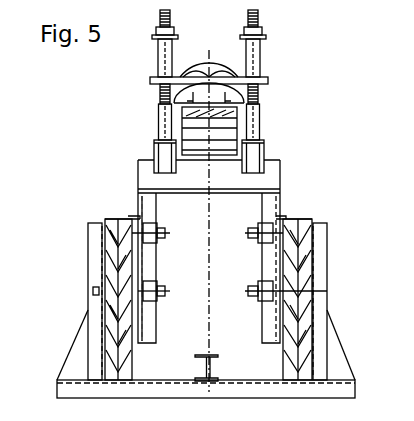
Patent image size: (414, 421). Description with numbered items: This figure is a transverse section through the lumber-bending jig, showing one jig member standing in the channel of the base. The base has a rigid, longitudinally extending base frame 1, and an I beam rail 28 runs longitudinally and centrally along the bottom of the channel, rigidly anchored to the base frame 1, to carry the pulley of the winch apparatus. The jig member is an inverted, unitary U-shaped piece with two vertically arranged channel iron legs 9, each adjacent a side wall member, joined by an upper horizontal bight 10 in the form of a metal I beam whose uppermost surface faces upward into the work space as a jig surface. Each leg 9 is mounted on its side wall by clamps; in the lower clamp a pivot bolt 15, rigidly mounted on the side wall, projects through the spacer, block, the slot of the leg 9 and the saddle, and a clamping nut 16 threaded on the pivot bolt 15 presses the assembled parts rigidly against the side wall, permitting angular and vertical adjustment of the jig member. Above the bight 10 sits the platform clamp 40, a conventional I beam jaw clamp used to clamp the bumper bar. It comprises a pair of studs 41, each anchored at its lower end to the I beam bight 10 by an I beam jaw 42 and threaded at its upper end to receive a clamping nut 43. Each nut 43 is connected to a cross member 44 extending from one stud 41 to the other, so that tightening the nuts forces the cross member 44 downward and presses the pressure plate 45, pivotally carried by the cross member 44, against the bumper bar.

The base frame 1 is at (307, 348).
The channel iron leg 9 is at (266, 321).
The upper horizontal bight 10 is at (203, 182).
The pivot bolt 15 is at (138, 291).
The clamping nut 16 is at (160, 293).
The I beam rail 28 is at (211, 364).
The platform clamp 40 is at (124, 80).
The stud 41 is at (160, 99).
The I beam jaw 42 is at (157, 151).
The clamping nut 43 is at (173, 33).
The cross member 44 is at (198, 67).
The pressure plate 45 is at (209, 93).